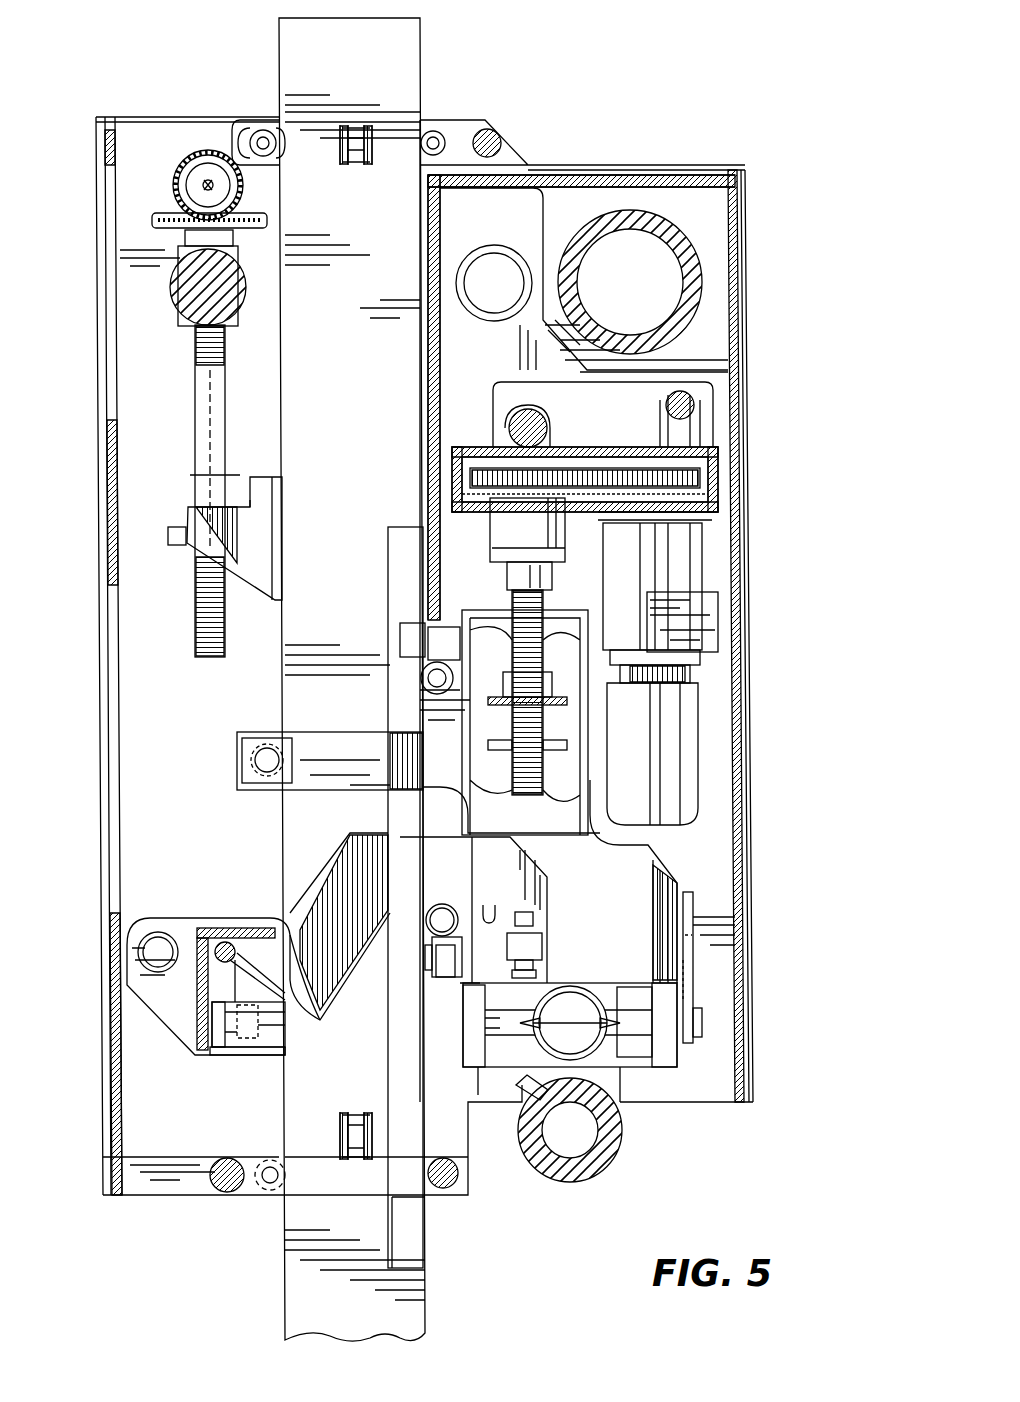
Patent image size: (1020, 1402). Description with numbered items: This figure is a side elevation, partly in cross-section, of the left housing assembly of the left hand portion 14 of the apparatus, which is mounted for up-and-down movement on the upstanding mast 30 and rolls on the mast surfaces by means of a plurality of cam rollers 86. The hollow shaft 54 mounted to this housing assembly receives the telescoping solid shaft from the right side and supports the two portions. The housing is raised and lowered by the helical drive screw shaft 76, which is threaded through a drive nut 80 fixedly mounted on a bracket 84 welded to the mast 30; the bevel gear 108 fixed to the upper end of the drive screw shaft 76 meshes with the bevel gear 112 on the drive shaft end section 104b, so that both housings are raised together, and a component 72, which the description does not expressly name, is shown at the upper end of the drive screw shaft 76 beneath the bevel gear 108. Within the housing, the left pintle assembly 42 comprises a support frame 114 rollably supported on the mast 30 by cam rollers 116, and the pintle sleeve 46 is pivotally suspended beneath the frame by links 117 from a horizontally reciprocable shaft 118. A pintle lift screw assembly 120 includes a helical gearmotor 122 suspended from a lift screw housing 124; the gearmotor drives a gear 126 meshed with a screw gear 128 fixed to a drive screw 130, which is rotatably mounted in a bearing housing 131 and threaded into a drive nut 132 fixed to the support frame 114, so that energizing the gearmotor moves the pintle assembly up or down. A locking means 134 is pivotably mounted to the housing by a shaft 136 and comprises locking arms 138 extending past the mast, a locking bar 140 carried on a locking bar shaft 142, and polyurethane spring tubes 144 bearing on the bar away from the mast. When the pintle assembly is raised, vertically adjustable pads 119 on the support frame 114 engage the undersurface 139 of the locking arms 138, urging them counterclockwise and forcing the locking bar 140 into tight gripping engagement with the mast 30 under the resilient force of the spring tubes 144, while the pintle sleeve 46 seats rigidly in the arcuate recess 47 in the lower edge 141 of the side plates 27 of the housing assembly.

The left hand portion 14 is at (694, 62).
The side plates 27 is at (712, 1047).
The mast 30 is at (372, 350).
The left pintle assembly 42 is at (702, 856).
The pintle sleeve 46 is at (615, 1150).
The arcuate recess 47 is at (508, 1103).
The hollow shaft 54 is at (702, 272).
The cylinder 72 is at (180, 318).
The helical drive screw shaft 76 is at (200, 437).
The drive nut 80 is at (182, 525).
The bracket 84 is at (262, 548).
The cam rollers 86 is at (262, 130).
The end section of drive shaft 104b is at (208, 160).
The bevel gear 108 is at (150, 220).
The bevel gear 112 is at (185, 175).
The support frame 114 is at (652, 905).
The cam rollers 116 is at (402, 650).
The links 117 is at (610, 1075).
The shaft 118 is at (572, 986).
The vertically adjustable pads 119 is at (540, 924).
The pintle lift screw assembly 120 is at (776, 522).
The helical gearmotor 122 is at (702, 626).
The lift screw housing 124 is at (720, 470).
The gear 126 is at (640, 448).
The screw gear 128 is at (548, 445).
The drive screw 130 is at (510, 595).
The bearing housing 131 is at (518, 535).
The drive nut 132 is at (567, 705).
The locking means 134 is at (228, 850).
The shaft 136 is at (157, 935).
The locking arms 138 is at (332, 872).
The undersurface 139 is at (488, 905).
The locking bar 140 is at (280, 1025).
The lower edge 141 is at (710, 1102).
The locking bar shaft 142 is at (226, 942).
The polyurethane spring tubes 144 is at (250, 1052).